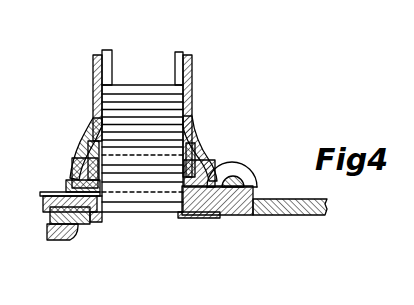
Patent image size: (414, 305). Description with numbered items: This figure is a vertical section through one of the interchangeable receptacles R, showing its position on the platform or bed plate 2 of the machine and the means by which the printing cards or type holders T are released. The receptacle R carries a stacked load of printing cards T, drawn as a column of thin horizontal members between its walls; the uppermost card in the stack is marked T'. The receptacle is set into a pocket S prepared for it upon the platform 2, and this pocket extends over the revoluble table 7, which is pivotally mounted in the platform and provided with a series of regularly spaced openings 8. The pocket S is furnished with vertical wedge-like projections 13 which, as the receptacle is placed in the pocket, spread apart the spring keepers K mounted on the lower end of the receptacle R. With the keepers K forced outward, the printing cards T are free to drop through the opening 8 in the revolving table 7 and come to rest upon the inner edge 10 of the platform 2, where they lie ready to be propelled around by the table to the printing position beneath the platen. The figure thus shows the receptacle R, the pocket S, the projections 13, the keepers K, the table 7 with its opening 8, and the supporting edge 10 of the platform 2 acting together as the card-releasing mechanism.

The interchangeable receptacle R is at (192, 68).
The printing card T is at (142, 163).
The cylinder wall T' is at (152, 116).
The spring keeper K is at (84, 133).
The vertical wedge like projection 13 is at (73, 160).
The pocket S is at (215, 164).
The platform 2 is at (263, 200).
The revoluble table 7 is at (43, 205).
The opening 8 is at (96, 210).
The inner edge of the platform 10 is at (100, 207).